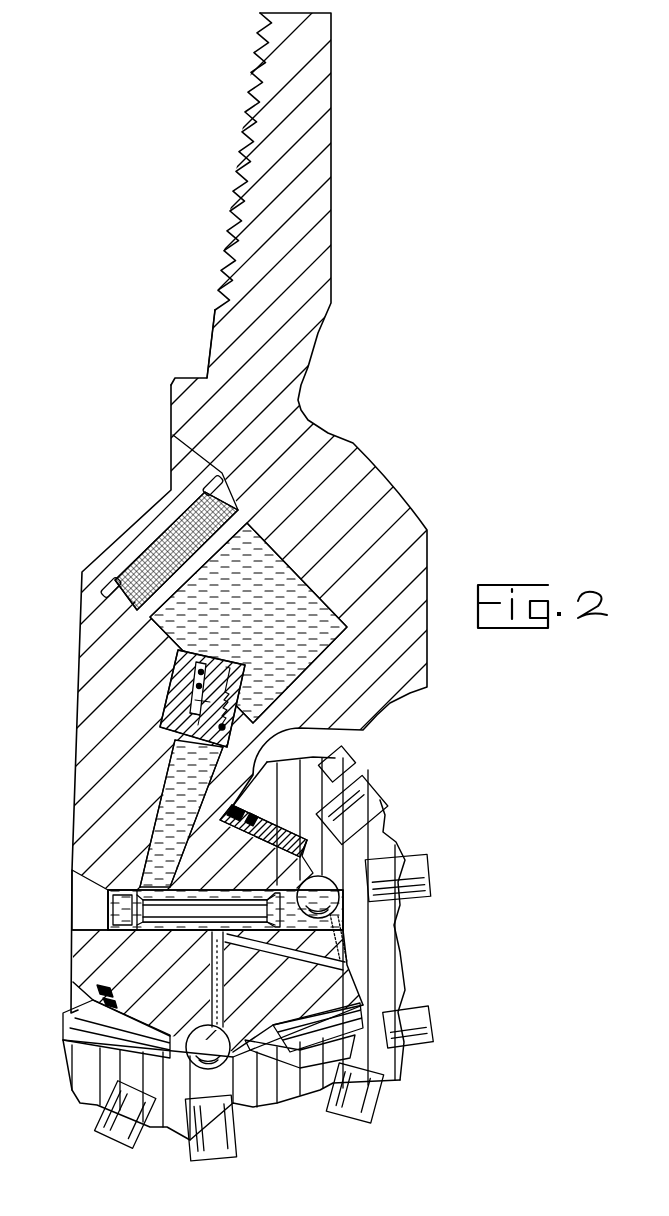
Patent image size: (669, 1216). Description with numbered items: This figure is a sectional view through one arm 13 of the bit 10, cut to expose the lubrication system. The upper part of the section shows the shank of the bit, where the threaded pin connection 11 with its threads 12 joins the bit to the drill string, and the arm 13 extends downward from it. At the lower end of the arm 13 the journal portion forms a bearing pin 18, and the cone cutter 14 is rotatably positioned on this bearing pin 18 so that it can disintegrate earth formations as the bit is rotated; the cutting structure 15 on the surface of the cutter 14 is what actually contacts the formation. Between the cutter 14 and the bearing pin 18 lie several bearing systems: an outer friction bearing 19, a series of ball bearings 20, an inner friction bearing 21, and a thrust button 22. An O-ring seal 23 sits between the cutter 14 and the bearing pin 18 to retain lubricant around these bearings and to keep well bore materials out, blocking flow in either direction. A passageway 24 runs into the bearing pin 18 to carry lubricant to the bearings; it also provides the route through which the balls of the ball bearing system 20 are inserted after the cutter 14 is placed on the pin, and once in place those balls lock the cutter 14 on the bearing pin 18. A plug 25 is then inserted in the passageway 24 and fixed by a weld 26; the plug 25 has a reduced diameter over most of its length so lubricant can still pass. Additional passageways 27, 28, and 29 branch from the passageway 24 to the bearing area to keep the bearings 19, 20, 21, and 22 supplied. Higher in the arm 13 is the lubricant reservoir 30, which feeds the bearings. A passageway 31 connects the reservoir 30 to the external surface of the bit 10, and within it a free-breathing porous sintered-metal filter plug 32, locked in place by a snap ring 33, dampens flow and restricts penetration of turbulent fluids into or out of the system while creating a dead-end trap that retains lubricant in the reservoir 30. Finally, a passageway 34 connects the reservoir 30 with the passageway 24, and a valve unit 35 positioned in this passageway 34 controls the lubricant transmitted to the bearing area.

The bit 10 is at (91, 300).
The pin shank 11 is at (235, 355).
The threads 12 is at (243, 156).
The arm 13 is at (101, 663).
The cutter 14 is at (315, 1090).
The cutting structure 15 is at (413, 857).
The bearing pin 18 is at (100, 963).
The outer friction bearing 19 is at (113, 1015).
The ball bearings 20 is at (342, 898).
The inner friction bearing 21 is at (347, 960).
The thrust button 22 is at (335, 1007).
The O-ring seal 23 is at (97, 988).
The passageway 24 is at (117, 938).
The plug 25 is at (118, 908).
The weld 26 is at (72, 872).
The passageway 27 is at (257, 853).
The passageway 28 is at (285, 956).
The passageway 29 is at (210, 992).
The lubricant reservoir 30 is at (307, 590).
The passageway 31 is at (222, 533).
The porous filter plug 32 is at (116, 606).
The snap ring 33 is at (141, 550).
The passageway 34 is at (175, 797).
The valve unit 35 is at (178, 672).